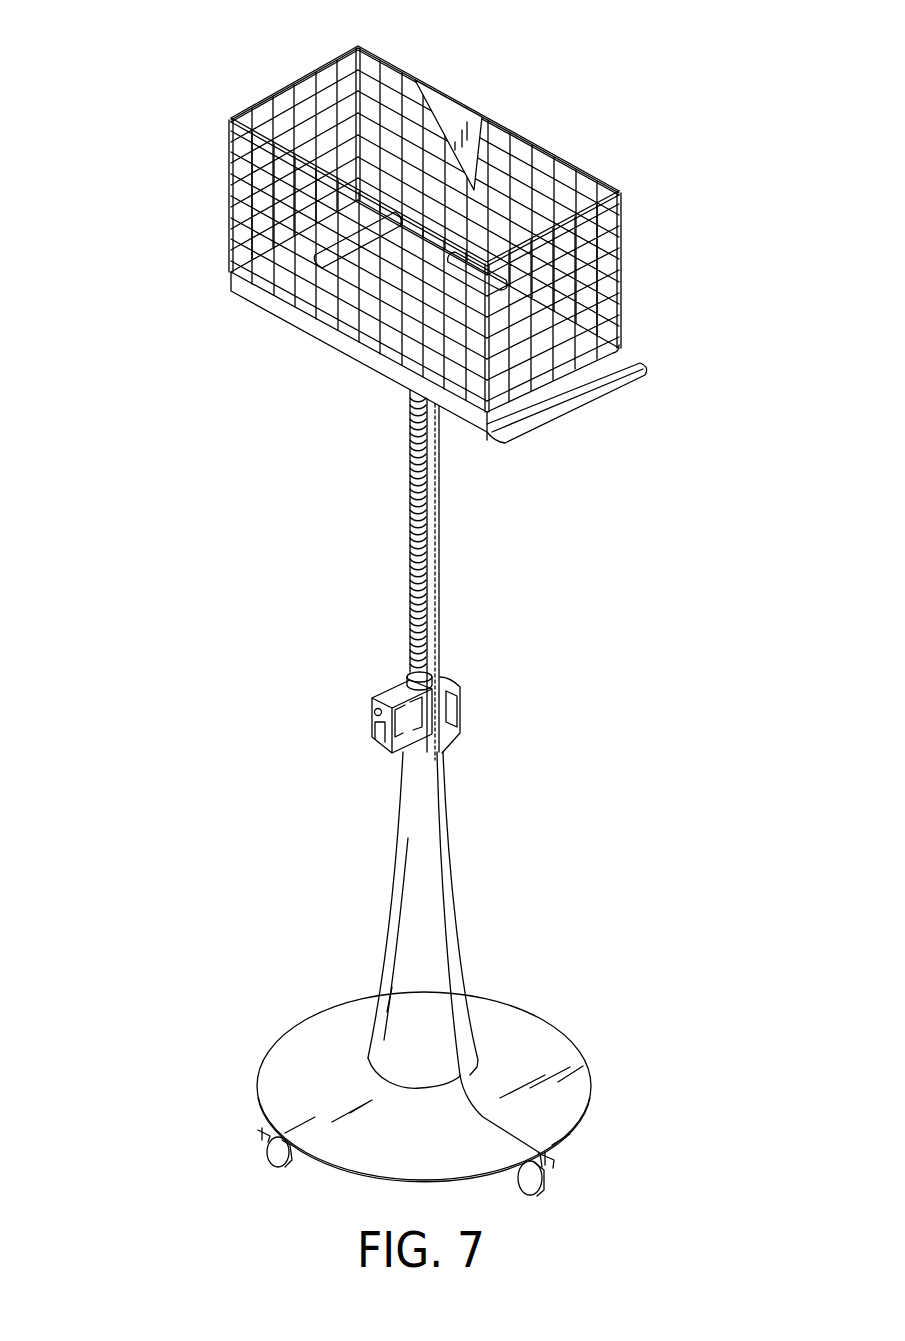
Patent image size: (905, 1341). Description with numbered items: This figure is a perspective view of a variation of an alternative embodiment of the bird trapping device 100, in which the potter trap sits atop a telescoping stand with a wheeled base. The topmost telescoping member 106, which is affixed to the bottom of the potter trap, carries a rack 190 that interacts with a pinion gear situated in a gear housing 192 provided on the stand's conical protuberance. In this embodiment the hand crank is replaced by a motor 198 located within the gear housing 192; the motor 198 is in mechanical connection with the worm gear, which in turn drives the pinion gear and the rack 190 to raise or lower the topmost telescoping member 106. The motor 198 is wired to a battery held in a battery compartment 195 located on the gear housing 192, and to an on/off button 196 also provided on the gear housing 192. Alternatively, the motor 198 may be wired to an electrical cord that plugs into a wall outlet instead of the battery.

The bird trapping device 100 is at (126, 110).
The topmost telescoping member 106 is at (436, 552).
The rack 190 is at (410, 528).
The gear housing 192 is at (400, 688).
The battery compartment 195 is at (376, 740).
The on/off button 196 is at (375, 712).
The motor 198 is at (418, 723).